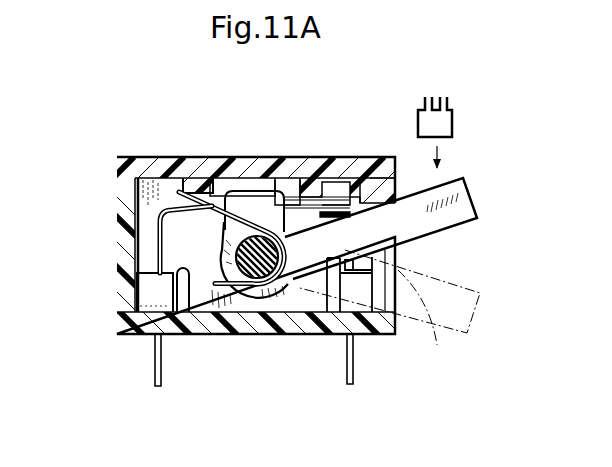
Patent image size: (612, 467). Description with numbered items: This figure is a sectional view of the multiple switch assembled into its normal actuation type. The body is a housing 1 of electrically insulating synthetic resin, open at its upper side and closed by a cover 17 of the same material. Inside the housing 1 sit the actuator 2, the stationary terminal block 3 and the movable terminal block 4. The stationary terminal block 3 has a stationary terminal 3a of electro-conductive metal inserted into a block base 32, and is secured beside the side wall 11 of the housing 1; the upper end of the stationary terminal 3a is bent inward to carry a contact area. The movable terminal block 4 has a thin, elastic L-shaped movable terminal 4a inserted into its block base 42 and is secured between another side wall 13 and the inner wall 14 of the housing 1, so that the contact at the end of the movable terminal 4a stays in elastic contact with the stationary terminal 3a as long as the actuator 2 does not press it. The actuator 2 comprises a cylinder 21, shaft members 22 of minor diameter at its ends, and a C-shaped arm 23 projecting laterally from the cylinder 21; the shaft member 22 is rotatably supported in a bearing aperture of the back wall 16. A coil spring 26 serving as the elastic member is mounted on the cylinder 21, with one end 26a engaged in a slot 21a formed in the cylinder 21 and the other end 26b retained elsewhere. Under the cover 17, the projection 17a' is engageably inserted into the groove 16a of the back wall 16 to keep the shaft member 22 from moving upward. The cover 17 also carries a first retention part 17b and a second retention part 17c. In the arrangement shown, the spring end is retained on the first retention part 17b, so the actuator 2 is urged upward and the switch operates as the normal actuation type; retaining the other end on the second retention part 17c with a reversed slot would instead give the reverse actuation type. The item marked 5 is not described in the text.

The housing 1 is at (120, 337).
The actuator 2 is at (212, 255).
The stationary terminal block 3 is at (345, 262).
The stationary terminal 3a is at (355, 373).
The movable terminal block 4 is at (133, 268).
The movable terminal 4a is at (144, 270).
The plug 5 is at (454, 122).
The side wall 11 is at (398, 300).
The side wall 13 is at (118, 240).
The inner wall 14 is at (184, 342).
The back wall 16 is at (138, 190).
The groove 16a is at (248, 186).
The cover 17 is at (145, 160).
The projection 17a' is at (327, 158).
The first retention part 17b is at (200, 178).
The second retention part 17c is at (314, 178).
The cylinder 21 is at (280, 340).
The slot 21a is at (237, 340).
The shaft member 22 is at (250, 340).
The C-shaped arm 23 is at (457, 287).
The coil spring 26 is at (307, 340).
The end of the coil spring 26a is at (200, 340).
The other end of the coil spring 26b is at (165, 193).
The block base 32 is at (380, 333).
The block base 42 is at (148, 298).